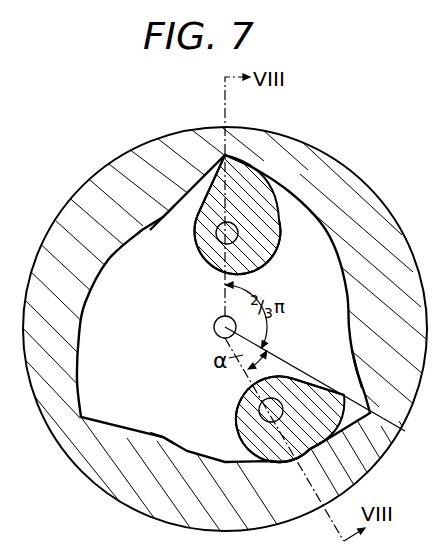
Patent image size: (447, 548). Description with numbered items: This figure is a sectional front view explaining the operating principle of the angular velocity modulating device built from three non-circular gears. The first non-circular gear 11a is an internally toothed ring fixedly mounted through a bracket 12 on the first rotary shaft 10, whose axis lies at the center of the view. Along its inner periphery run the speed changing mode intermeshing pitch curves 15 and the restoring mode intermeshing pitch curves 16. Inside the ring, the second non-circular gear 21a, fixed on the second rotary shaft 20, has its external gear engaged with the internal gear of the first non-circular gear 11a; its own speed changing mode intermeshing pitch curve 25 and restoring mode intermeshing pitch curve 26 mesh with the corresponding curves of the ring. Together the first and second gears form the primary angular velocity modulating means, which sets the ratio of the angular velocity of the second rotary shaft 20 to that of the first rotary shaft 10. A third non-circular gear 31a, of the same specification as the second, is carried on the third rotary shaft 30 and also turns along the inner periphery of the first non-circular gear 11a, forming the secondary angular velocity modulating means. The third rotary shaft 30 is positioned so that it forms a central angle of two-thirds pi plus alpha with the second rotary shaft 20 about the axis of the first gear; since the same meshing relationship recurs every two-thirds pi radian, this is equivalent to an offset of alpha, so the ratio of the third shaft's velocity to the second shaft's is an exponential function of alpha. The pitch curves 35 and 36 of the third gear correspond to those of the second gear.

The first rotary shaft 10 is at (214, 325).
The first non-circular gear 11a is at (108, 178).
The bracket 12 is at (231, 299).
The speed changing mode intermeshing pitch curves 15 is at (110, 263).
The restoring mode intermeshing pitch curves 16 is at (173, 215).
The second rotary shaft 20 is at (218, 240).
The second non-circular gear 21a is at (233, 203).
The speed changing mode intermeshing pitch curve 25 is at (280, 228).
The restoring mode intermeshing pitch curve 26 is at (194, 222).
The third rotary shaft 30 is at (246, 389).
The third non-circular gear 31a is at (299, 419).
The pin 35 is at (238, 406).
The lobe flank 36 is at (309, 372).